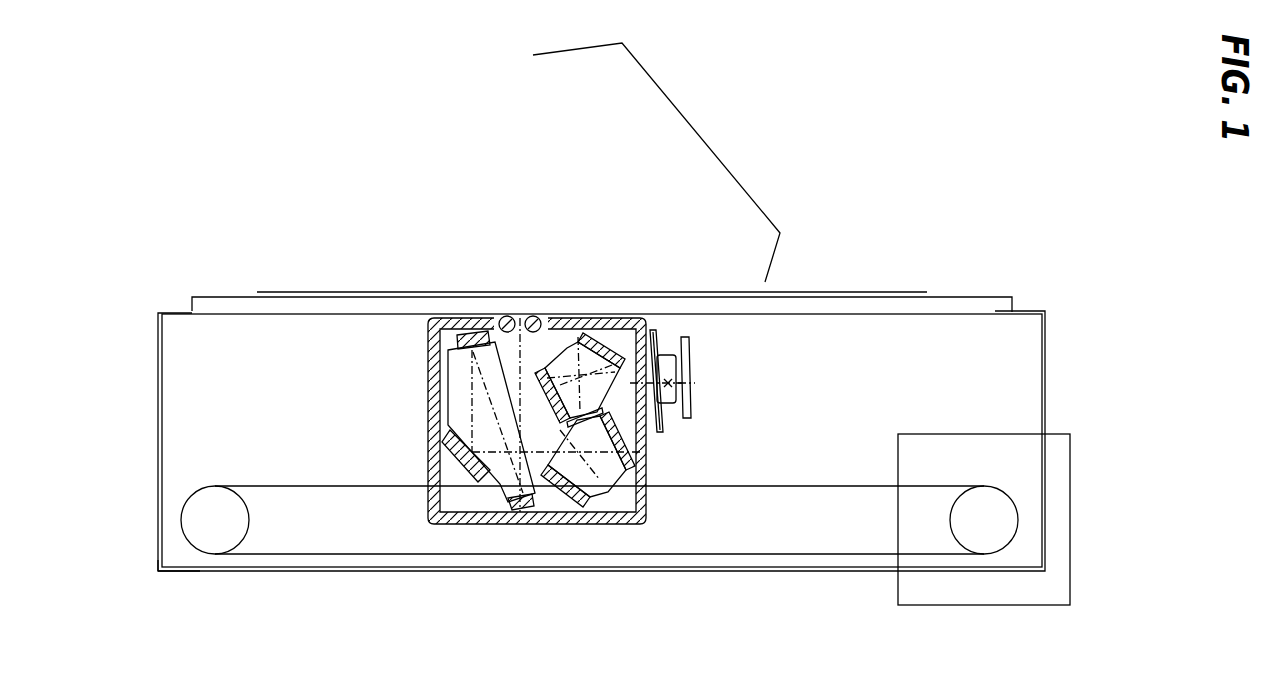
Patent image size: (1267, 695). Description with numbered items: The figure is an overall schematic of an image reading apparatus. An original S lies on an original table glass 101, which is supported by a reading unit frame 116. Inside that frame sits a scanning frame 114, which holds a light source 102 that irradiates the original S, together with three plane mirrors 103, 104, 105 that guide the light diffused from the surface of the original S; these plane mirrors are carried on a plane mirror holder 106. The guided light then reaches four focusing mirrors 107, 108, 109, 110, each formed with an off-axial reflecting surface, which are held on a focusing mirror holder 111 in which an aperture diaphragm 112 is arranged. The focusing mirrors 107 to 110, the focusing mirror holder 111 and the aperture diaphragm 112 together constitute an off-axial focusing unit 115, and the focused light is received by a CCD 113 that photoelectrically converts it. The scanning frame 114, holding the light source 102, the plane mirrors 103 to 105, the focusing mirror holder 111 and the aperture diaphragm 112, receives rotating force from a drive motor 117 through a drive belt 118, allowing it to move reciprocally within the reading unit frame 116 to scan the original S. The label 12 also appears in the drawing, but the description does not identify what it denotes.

The original table glass 101 is at (272, 303).
The optical reading unit 12 is at (417, 368).
The original S is at (398, 290).
The light source 102 is at (533, 316).
The plane mirror 103 is at (517, 510).
The plane mirror 104 is at (463, 336).
The plane mirror 105 is at (455, 458).
The plane mirror holder 106 is at (500, 490).
The focusing mirror 107 is at (620, 440).
The focusing mirror 108 is at (593, 354).
The focusing mirror 109 is at (608, 370).
The focusing mirror 110 is at (550, 378).
The focusing mirror holder 111 is at (617, 385).
The aperture diaphragm 112 is at (580, 375).
The CCD 113 is at (668, 400).
The scanning frame 114 is at (447, 518).
The off-axial focusing unit 115 is at (710, 148).
The reading unit frame 116 is at (164, 574).
The drive motor 117 is at (938, 462).
The drive belt 118 is at (790, 555).